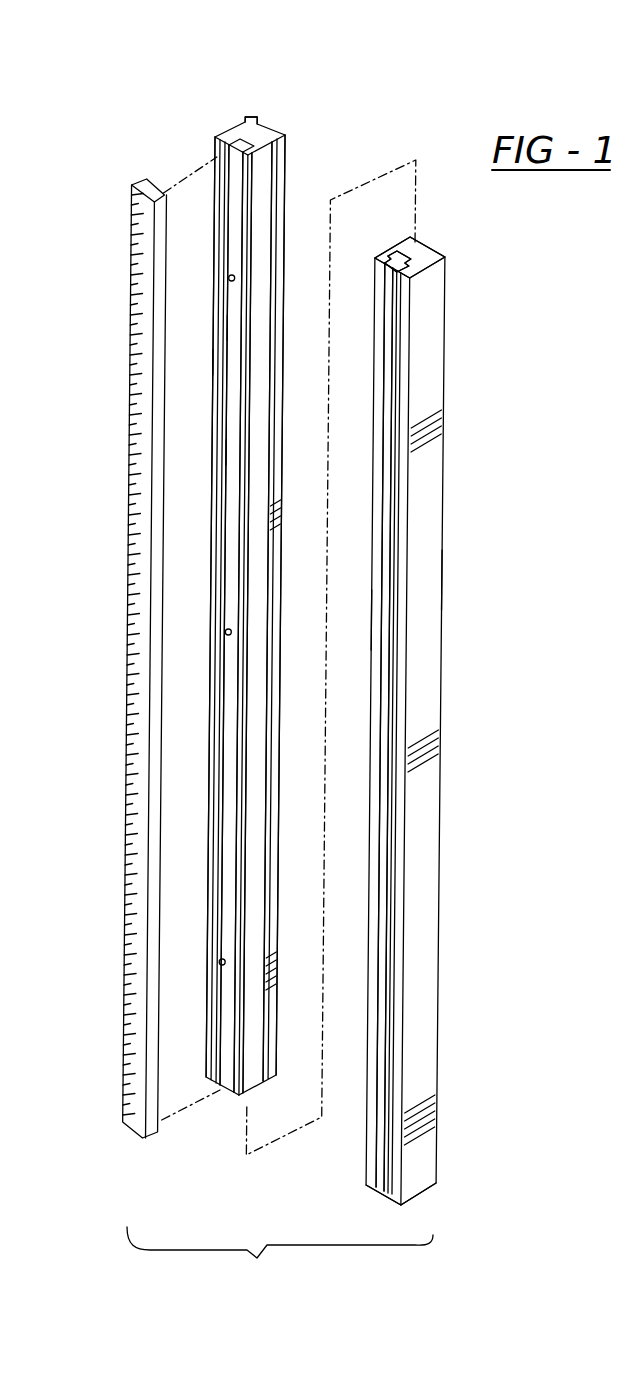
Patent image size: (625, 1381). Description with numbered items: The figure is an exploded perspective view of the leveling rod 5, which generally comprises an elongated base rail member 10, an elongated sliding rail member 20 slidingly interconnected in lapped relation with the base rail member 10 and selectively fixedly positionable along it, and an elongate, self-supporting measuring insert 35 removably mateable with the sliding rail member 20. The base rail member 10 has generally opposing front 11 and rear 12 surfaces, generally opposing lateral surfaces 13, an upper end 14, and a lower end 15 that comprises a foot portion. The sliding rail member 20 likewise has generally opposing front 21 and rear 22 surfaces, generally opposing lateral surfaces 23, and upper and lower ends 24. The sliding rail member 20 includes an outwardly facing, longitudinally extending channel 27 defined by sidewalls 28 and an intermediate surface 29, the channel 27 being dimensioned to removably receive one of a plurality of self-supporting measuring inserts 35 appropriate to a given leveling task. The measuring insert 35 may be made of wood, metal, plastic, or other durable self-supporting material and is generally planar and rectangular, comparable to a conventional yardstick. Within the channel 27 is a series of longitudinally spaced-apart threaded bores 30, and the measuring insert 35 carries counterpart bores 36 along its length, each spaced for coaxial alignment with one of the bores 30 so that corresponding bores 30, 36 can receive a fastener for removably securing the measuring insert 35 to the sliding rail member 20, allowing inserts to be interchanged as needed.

The leveling rod 5 is at (280, 1261).
The elongated base rail member 10 is at (428, 331).
The front surface of base rail member 11 is at (370, 619).
The rear surface of base rail member 12 is at (441, 582).
The lateral surfaces of base rail member 13 is at (377, 271).
The upper end of base rail member 14 is at (423, 254).
The lower end of base rail member 15 is at (400, 1233).
The elongated sliding rail member 20 is at (203, 133).
The front surface of sliding rail member 21 is at (202, 207).
The rear surface of sliding rail member 22 is at (277, 128).
The lateral surfaces of sliding rail member 23 is at (208, 838).
The upper and lower ends of sliding rail member 24 is at (244, 122).
The channel 27 is at (230, 452).
The sidewalls 28 is at (213, 363).
The intermediate surface 29 is at (237, 328).
The threaded bores 30 is at (229, 278).
The measuring insert 35 is at (127, 555).
The counterpart bores 36 is at (133, 327).